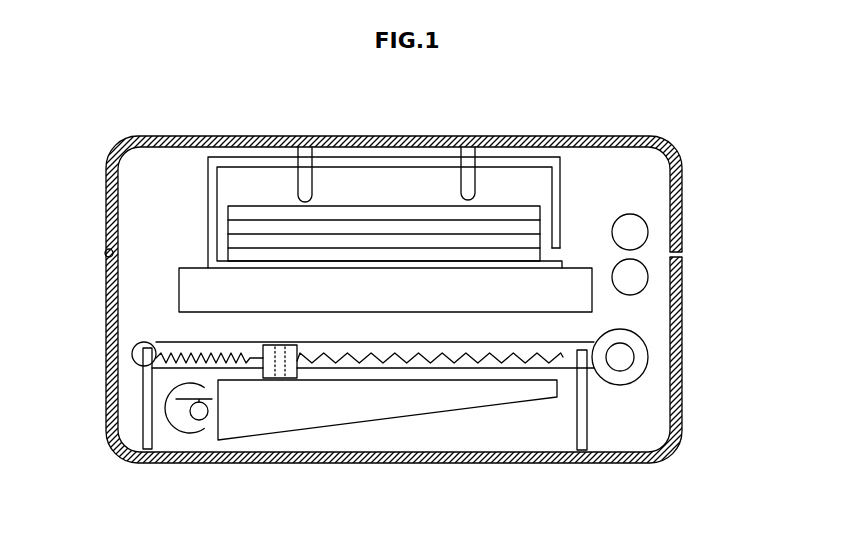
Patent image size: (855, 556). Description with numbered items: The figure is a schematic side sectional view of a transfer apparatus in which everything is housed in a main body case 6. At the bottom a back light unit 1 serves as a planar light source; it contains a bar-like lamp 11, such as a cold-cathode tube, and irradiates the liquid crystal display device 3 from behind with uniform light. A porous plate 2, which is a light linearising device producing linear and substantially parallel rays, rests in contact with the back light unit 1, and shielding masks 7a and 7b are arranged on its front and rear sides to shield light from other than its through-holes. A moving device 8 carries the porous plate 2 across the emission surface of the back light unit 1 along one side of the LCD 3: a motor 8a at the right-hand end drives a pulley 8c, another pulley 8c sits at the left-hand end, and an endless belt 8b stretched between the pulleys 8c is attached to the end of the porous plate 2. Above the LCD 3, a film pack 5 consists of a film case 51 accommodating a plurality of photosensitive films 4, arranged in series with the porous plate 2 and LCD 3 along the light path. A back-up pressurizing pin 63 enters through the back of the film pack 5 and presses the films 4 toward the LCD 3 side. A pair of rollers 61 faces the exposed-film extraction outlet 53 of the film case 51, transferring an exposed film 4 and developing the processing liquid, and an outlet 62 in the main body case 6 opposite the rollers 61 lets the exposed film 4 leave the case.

The back light unit 1 is at (428, 415).
The porous plate 2 is at (265, 346).
The liquid crystal display device (LCD) 3 is at (586, 301).
The photosensitive film 4 is at (261, 253).
The film pack 5 is at (181, 244).
The main body case 6 is at (173, 137).
The shielding mask 7a is at (180, 348).
The shielding mask 7b is at (520, 358).
The moving device 8 is at (639, 393).
The motor 8a is at (637, 333).
The endless belt 8b is at (203, 342).
The pulley 8c is at (636, 356).
The bar-like lamp 11 is at (163, 412).
The film case 51 is at (565, 176).
The exposed-film extraction outlet 53 is at (565, 253).
The pair of rollers 61 is at (635, 227).
The outlet 62 is at (684, 254).
The back-up pressurizing pin 63 is at (306, 195).